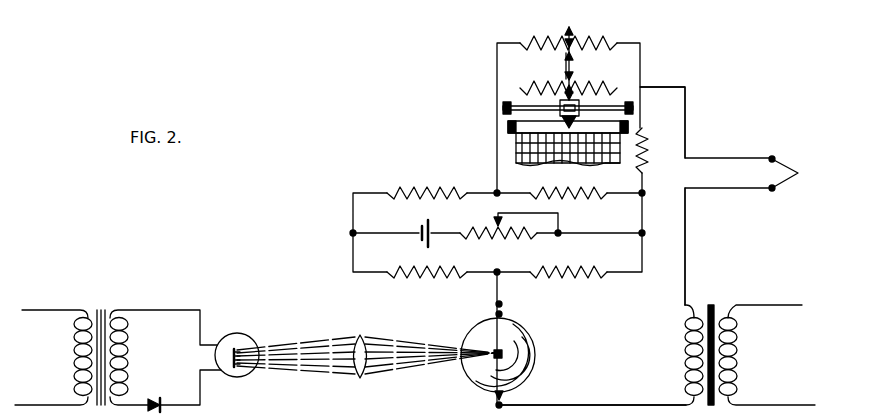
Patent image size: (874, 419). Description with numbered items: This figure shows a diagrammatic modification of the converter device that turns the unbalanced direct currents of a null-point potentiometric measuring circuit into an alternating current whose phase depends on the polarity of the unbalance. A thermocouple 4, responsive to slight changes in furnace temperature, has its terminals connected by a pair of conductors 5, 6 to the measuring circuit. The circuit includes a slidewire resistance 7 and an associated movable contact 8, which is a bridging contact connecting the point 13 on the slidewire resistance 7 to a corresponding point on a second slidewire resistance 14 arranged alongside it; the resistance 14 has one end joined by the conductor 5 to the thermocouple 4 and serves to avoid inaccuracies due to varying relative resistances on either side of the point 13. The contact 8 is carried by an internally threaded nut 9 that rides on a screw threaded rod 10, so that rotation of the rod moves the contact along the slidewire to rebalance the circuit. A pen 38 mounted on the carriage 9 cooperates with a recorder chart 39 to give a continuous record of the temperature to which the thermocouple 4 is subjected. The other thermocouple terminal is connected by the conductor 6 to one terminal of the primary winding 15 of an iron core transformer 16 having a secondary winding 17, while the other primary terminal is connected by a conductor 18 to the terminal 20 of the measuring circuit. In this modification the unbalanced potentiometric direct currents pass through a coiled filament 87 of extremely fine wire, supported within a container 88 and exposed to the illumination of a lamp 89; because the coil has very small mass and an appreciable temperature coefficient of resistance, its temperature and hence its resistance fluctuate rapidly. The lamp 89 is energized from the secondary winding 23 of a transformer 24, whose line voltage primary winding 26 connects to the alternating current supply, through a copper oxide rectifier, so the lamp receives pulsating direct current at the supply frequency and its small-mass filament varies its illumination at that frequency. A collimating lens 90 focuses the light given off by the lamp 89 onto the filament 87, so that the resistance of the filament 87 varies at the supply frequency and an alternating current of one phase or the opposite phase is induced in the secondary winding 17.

The thermocouple 4 is at (786, 168).
The conductor 5 is at (655, 88).
The conductor 6 is at (687, 244).
The slidewire resistance 7 is at (584, 43).
The movable contact 8 is at (566, 62).
The internally threaded nut 9 is at (588, 106).
The screw threaded rod 10 is at (526, 106).
The point 13 is at (572, 60).
The slidewire resistance 14 is at (594, 86).
The primary winding 15 is at (687, 365).
The iron core transformer 16 is at (711, 303).
The secondary winding 17 is at (735, 366).
The conductor 18 is at (608, 400).
The terminal of the potentiometric measuring circuit 20 is at (497, 270).
The secondary winding 23 is at (127, 365).
The transformer 24 is at (103, 306).
The line voltage primary winding 26 is at (75, 365).
The pen 38 is at (568, 114).
The recorder chart 39 is at (605, 164).
The coiled filament 87 is at (502, 356).
The container 88 is at (482, 318).
The lamp 89 is at (237, 377).
The collimating lens 90 is at (361, 378).